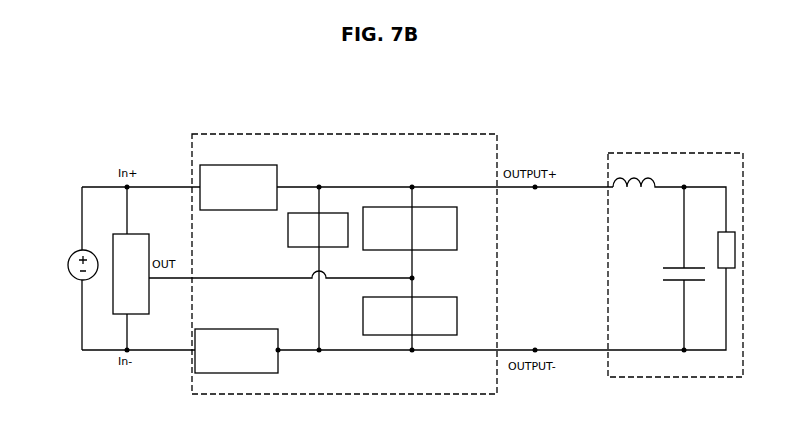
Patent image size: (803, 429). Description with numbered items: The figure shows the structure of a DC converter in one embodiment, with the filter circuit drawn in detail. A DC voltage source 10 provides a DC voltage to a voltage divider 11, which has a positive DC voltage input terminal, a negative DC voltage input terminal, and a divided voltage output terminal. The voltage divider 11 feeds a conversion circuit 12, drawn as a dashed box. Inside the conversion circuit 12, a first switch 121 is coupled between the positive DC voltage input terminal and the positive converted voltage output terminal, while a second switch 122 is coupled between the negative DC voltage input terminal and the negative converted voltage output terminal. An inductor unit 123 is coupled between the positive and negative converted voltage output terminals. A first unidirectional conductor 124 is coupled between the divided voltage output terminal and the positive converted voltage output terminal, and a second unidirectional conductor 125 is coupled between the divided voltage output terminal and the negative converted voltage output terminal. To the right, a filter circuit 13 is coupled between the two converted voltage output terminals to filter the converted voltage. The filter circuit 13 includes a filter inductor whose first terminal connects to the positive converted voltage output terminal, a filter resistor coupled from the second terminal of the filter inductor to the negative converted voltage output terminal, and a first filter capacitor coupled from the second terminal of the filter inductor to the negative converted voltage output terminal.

The DC voltage source 10 is at (73, 258).
The voltage divider 11 is at (135, 234).
The conversion circuit 12 is at (374, 134).
The first switch 121 is at (263, 158).
The second switch 122 is at (262, 318).
The inductor unit 123 is at (288, 234).
The first unidirectional conductor 124 is at (480, 229).
The second unidirectional conductor 125 is at (480, 314).
The filter circuit 13 is at (672, 153).